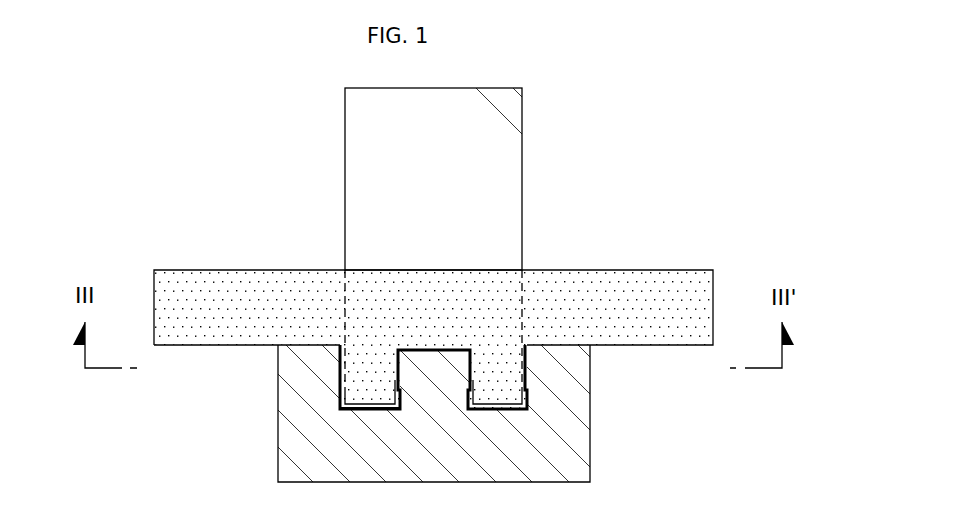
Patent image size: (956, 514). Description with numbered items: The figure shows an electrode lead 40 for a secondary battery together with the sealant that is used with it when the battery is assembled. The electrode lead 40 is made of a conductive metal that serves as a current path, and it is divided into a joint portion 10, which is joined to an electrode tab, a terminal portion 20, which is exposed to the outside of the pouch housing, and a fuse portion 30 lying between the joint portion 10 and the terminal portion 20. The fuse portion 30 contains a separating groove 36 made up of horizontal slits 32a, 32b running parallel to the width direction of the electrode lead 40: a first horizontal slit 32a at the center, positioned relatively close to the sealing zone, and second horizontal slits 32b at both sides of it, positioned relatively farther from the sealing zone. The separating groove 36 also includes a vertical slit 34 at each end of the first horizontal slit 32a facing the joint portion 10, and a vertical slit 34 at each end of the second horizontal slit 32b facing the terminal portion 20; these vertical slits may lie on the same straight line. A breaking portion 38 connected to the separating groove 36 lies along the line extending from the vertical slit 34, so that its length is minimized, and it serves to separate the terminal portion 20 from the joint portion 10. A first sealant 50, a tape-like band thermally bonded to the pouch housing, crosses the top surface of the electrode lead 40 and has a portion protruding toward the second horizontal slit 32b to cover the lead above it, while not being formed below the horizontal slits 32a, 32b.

The joint portion 10 is at (575, 464).
The terminal portion 20 is at (349, 158).
The fuse portion 30 is at (182, 368).
The first horizontal slit 32a is at (436, 351).
The second horizontal slit 32b is at (356, 410).
The vertical slit 34 is at (341, 393).
The separating groove 36 is at (223, 462).
The breaking portion 38 is at (340, 365).
The electrode lead 40 is at (160, 464).
The first sealant 50 is at (650, 276).